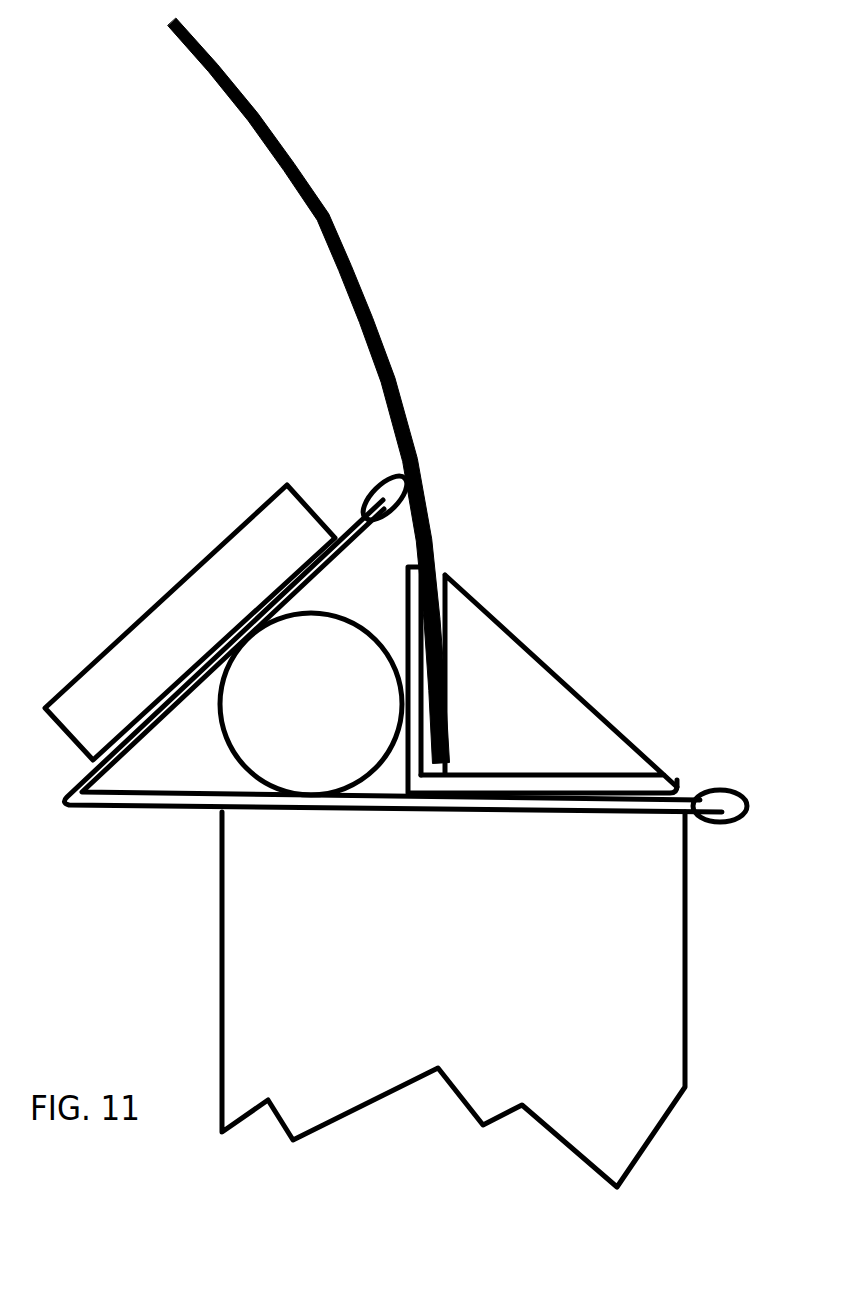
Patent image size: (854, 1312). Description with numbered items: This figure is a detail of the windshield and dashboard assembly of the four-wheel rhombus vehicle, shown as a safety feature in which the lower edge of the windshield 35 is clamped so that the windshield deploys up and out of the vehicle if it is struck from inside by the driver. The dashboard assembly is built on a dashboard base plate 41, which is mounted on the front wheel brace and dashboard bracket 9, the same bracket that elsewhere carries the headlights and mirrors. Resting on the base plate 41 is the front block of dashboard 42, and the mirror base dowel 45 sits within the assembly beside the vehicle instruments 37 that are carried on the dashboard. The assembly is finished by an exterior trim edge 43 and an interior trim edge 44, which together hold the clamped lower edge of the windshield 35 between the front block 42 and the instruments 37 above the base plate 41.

The front wheel brace and dashboard bracket 9 is at (232, 977).
The windshield 35 is at (358, 282).
The vehicle instruments 37 is at (137, 625).
The dashboard base plate 41 is at (126, 810).
The front block of dashboard 42 is at (560, 683).
The exterior trim edge 43 is at (728, 790).
The interior trim edge 44 is at (392, 477).
The mirror base dowel 45 is at (362, 627).